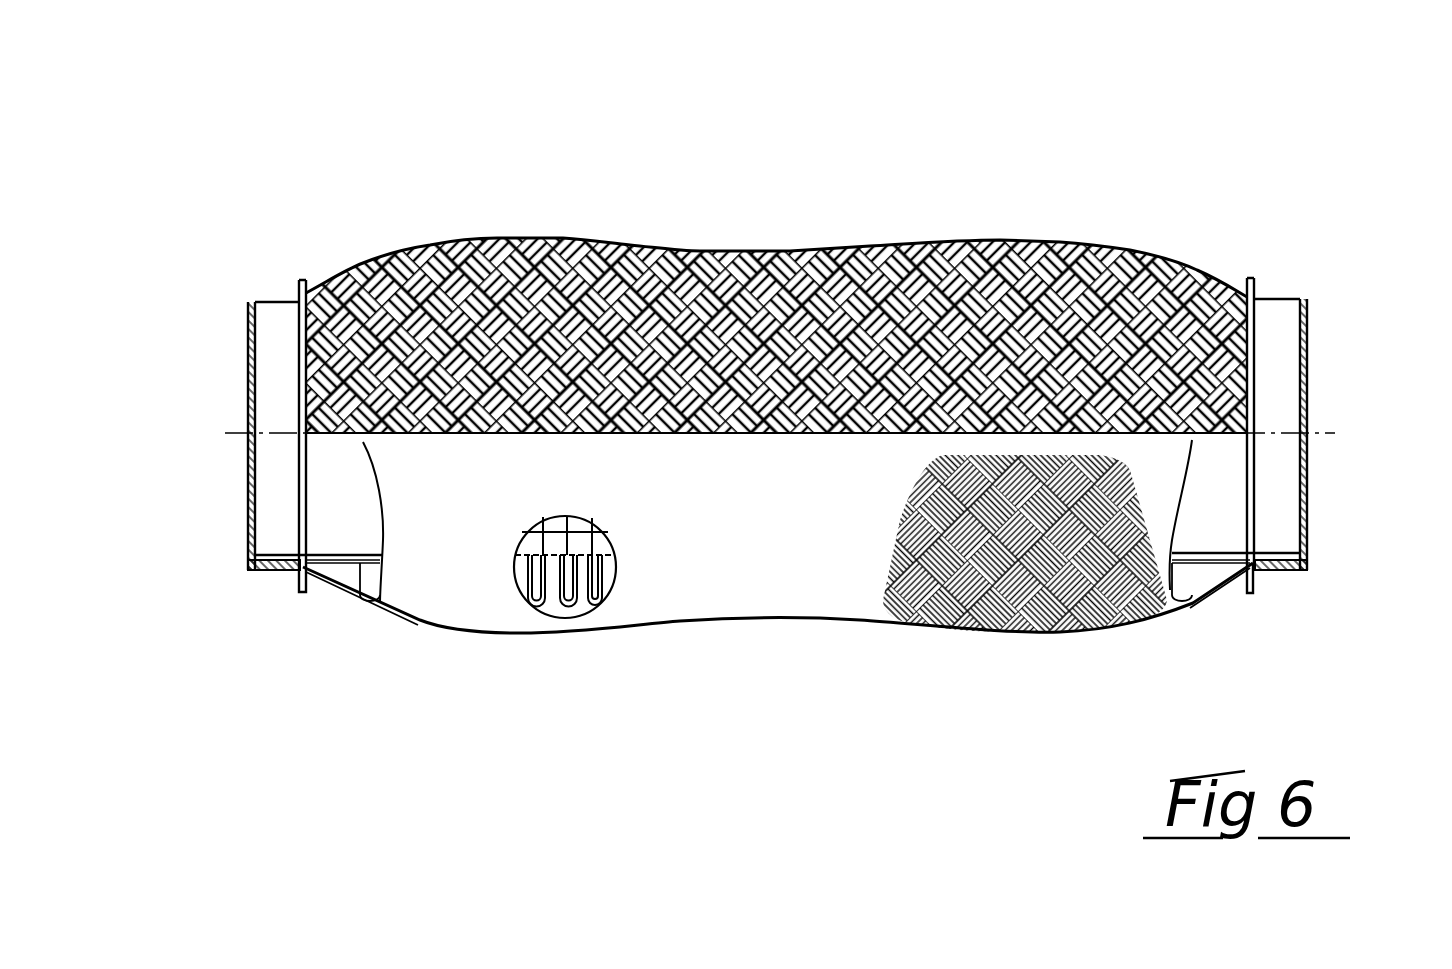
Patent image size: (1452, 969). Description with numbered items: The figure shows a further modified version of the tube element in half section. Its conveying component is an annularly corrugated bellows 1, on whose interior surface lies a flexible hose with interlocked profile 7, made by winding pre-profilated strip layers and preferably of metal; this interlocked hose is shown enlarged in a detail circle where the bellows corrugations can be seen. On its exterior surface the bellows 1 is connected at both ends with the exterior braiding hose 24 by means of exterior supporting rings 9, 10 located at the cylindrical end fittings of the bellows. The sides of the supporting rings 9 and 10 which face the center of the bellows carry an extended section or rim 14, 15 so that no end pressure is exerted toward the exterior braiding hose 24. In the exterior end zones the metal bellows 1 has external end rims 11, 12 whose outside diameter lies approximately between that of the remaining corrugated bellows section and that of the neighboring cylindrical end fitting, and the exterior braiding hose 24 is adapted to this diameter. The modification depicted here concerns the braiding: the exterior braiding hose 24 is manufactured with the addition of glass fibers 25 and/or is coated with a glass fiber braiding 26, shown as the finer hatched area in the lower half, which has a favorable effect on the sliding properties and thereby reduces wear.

The annularly corrugated bellows 1 is at (578, 597).
The flexible hose with interlocked profile 7 is at (540, 563).
The exterior supporting ring 9 is at (272, 520).
The exterior supporting ring 10 is at (1272, 502).
The external end rim 11 is at (367, 580).
The external end rim 12 is at (1178, 582).
The extended section or rim 14 is at (300, 285).
The extended section or rim 15 is at (1254, 282).
The exterior braiding hose 24 is at (590, 322).
The glass fibers 25 is at (870, 248).
The glass fiber braiding 26 is at (993, 562).